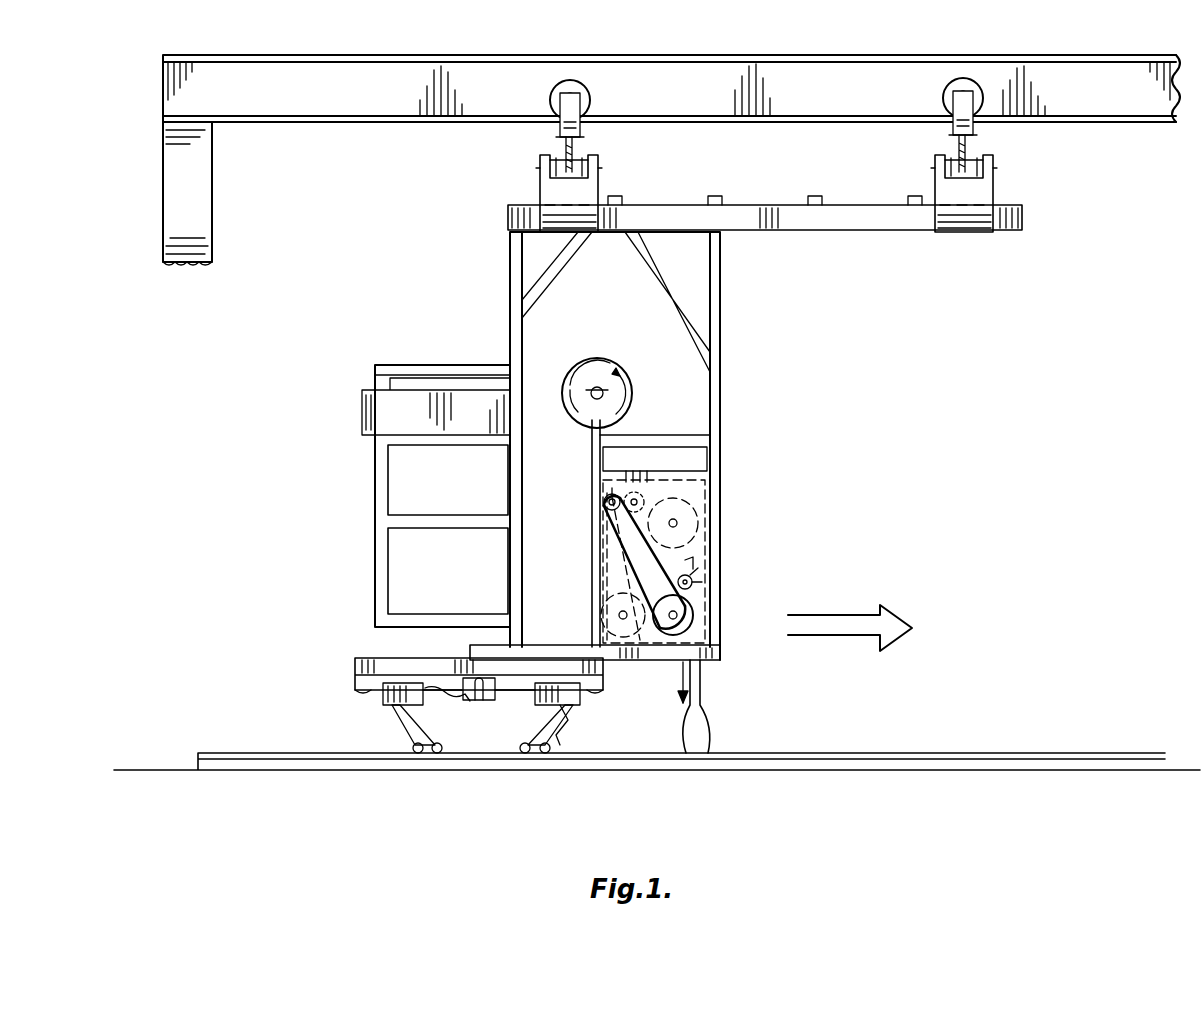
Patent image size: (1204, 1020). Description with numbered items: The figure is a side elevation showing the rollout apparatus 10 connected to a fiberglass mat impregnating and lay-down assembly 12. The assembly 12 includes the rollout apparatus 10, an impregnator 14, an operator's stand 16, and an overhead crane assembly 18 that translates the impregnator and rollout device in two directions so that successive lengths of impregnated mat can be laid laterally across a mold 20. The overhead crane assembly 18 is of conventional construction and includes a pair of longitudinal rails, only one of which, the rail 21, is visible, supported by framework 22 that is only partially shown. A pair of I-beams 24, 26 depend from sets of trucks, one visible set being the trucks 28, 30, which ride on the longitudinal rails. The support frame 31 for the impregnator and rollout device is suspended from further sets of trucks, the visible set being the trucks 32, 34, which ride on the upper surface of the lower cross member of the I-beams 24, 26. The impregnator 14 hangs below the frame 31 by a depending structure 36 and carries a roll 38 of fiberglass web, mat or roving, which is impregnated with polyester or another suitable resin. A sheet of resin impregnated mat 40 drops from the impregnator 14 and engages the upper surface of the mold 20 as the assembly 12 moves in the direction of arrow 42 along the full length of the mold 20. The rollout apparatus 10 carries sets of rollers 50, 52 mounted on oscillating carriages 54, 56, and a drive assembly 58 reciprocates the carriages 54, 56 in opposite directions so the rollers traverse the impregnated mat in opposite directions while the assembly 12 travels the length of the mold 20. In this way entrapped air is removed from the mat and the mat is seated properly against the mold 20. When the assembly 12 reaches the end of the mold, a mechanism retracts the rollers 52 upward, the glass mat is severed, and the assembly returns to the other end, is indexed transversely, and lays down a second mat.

The rollout apparatus 10 is at (343, 663).
The fiberglass mat impregnating and lay-down assembly 12 is at (1055, 300).
The impregnator 14 is at (738, 502).
The operator's stand 16 is at (355, 503).
The overhead crane assembly 18 is at (523, 158).
The mold 20 is at (932, 752).
The longitudinal rail 21 is at (387, 54).
The framework 22 is at (212, 204).
The I-beam 24 is at (575, 158).
The I-beam 26 is at (970, 158).
The truck 28 is at (580, 82).
The truck 30 is at (972, 80).
The support frame 31 is at (800, 232).
The truck 32 is at (548, 178).
The truck 34 is at (995, 180).
The depending structure 36 is at (722, 330).
The roll of fiberglass web 38 is at (598, 360).
The sheet of resin impregnated mat 40 is at (702, 688).
The arrow 42 is at (868, 612).
The set of rollers 50 is at (395, 742).
The set of rollers 52 is at (560, 744).
The oscillating carriage 54 is at (355, 708).
The oscillating carriage 56 is at (580, 696).
The drive assembly 58 is at (485, 700).